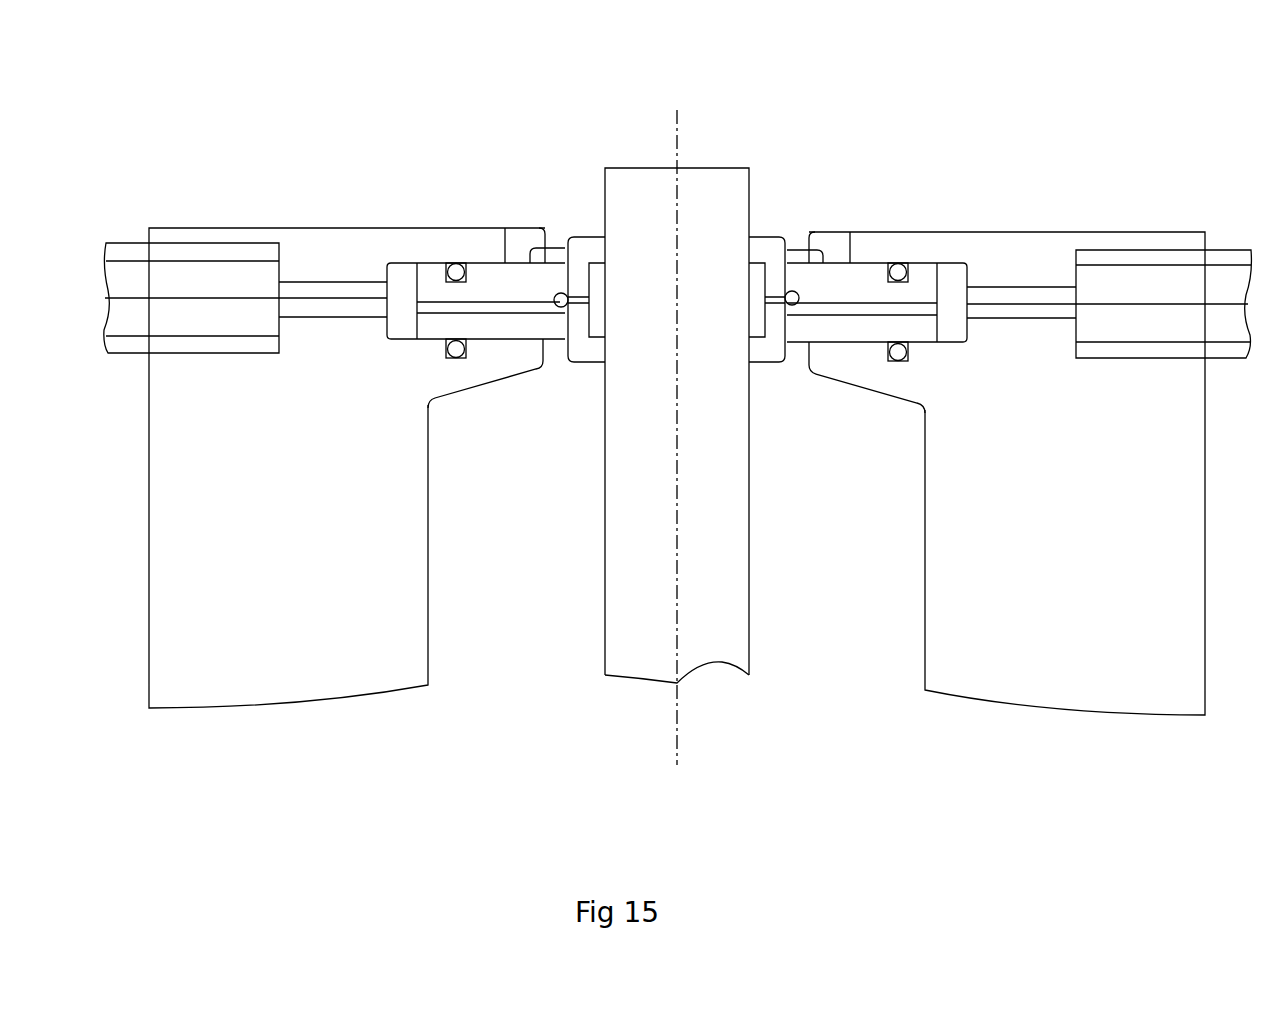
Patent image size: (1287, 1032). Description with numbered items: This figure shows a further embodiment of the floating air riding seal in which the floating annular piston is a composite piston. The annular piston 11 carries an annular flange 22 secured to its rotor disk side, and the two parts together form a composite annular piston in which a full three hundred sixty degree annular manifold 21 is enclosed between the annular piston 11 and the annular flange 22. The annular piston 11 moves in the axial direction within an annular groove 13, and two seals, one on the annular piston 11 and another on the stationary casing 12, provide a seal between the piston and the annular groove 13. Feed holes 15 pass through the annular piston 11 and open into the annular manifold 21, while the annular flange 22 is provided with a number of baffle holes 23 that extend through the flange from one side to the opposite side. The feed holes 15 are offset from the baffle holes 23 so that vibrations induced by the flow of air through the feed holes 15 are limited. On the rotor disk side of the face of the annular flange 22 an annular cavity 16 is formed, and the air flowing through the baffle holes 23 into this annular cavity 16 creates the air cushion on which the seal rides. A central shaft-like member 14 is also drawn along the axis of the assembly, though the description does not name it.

The annular piston 11 is at (486, 280).
The stationary casing 12 is at (222, 465).
The annular groove 13 is at (403, 292).
The rotor shaft 14 is at (693, 192).
The feed holes 15 is at (497, 305).
The annular cavity 16 is at (755, 318).
The annular manifold 21 is at (562, 290).
The annular flange 22 is at (579, 353).
The baffle holes 23 is at (765, 298).